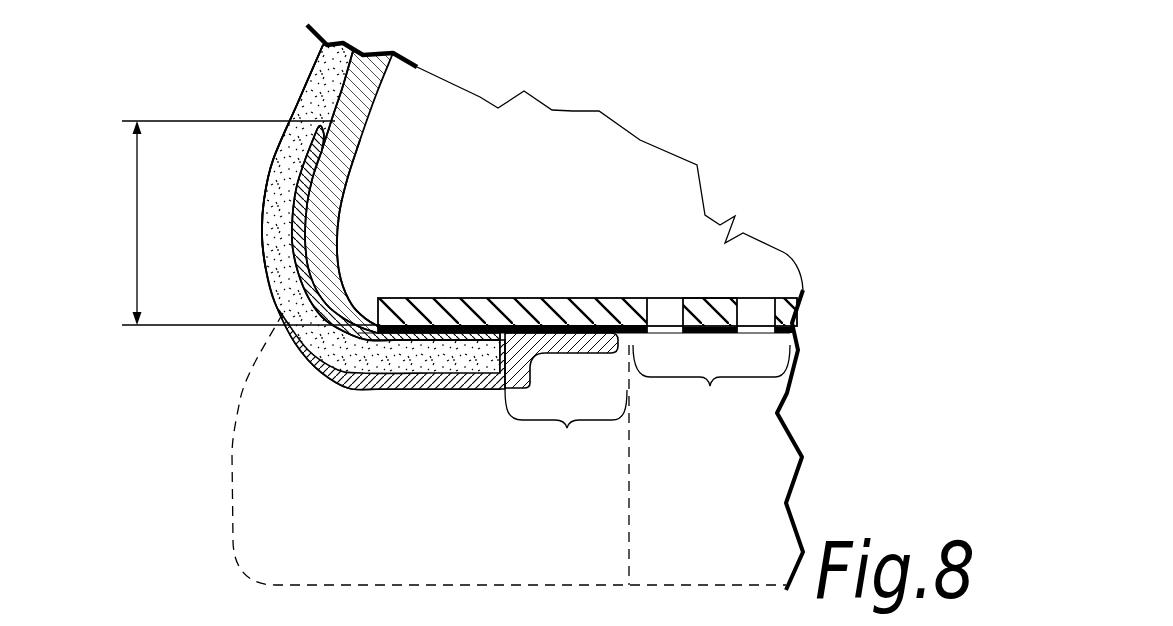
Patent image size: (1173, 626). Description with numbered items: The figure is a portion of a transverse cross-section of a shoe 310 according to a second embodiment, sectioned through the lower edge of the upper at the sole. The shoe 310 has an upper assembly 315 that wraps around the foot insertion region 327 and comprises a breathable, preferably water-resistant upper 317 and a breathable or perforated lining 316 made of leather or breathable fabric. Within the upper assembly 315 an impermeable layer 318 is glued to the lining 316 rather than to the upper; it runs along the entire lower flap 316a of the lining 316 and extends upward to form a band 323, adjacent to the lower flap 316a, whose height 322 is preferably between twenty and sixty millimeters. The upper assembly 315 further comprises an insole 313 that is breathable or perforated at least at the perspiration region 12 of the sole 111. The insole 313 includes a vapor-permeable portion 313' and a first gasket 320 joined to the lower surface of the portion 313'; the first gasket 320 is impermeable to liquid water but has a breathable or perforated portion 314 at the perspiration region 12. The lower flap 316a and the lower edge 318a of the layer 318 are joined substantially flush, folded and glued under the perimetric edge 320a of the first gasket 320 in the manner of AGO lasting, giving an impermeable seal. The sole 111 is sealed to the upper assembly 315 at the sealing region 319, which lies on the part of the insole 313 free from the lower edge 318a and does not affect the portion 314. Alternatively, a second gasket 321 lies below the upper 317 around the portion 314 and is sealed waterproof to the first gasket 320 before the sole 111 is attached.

The shoe 310 is at (749, 140).
The perspiration region 12 is at (775, 447).
The insole 313 is at (760, 249).
The portion of the insole 313' is at (668, 209).
The first gasket 320 is at (604, 314).
The perimetric edge of the first gasket 320a is at (402, 325).
The impermeable layer 318 is at (291, 150).
The lower edge of the layer 318a is at (470, 340).
The lining 316 is at (342, 87).
The lower flap of the lining 316a is at (343, 312).
The upper assembly 315 is at (251, 248).
The upper 317 is at (252, 211).
The band 323 is at (297, 222).
The second gasket 321 is at (488, 398).
The sealing region 319 is at (567, 428).
The breathable or perforated portion 314 is at (709, 390).
The height 322 is at (137, 203).
The foot insertion region 327 is at (530, 162).
The sole 111 is at (220, 455).